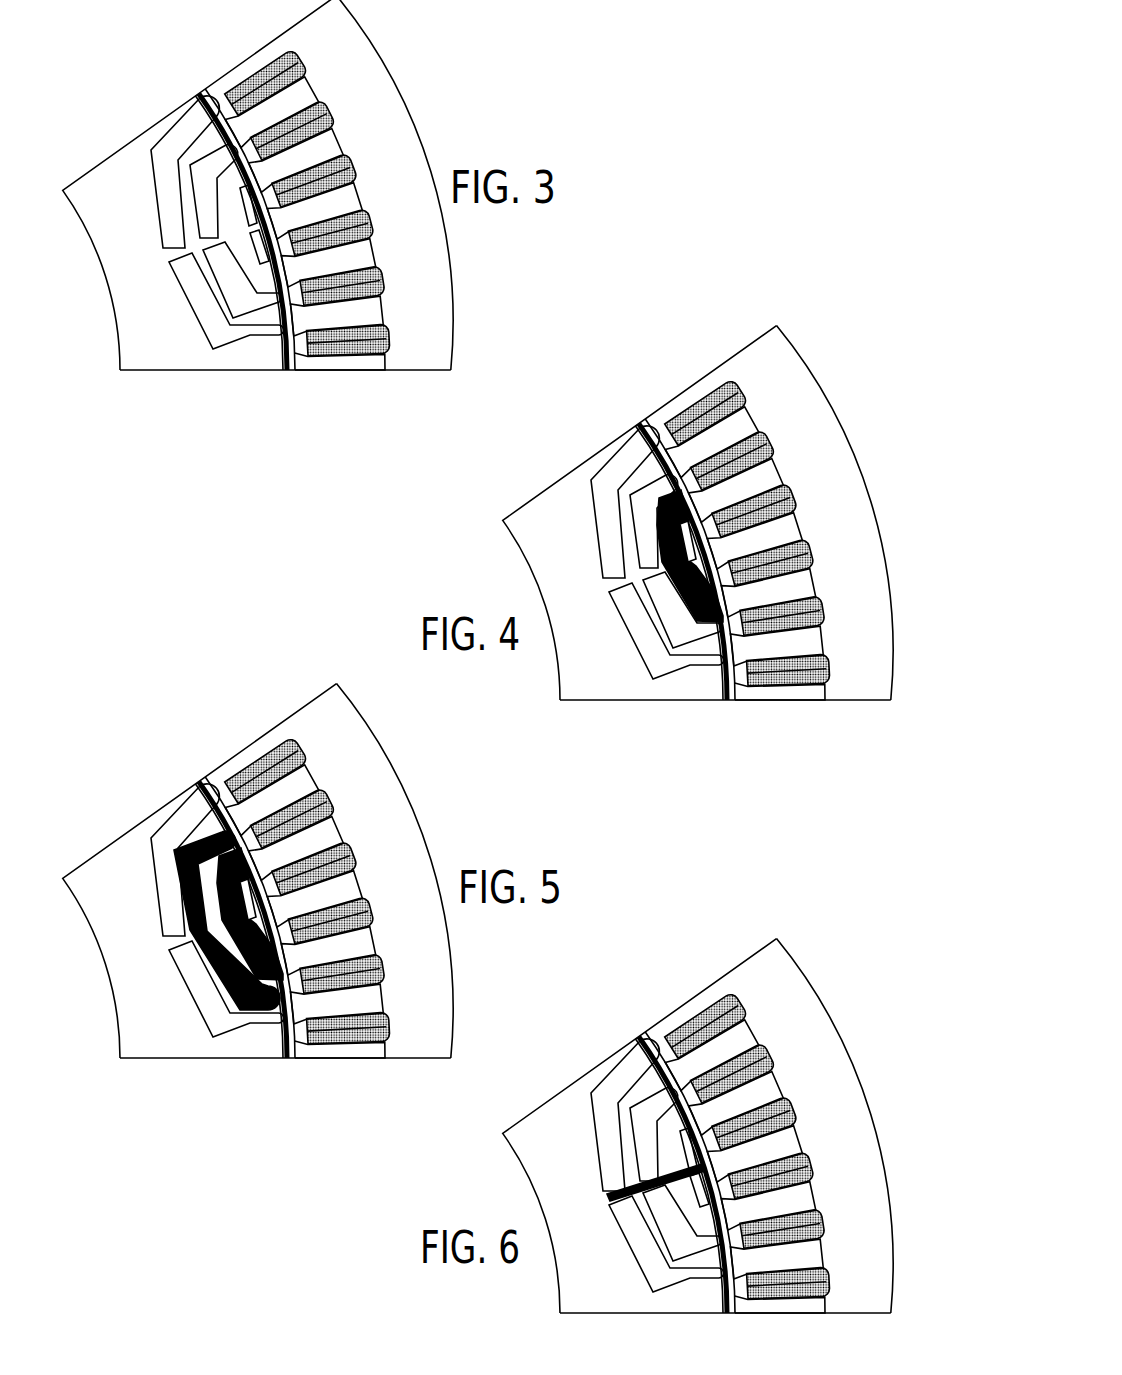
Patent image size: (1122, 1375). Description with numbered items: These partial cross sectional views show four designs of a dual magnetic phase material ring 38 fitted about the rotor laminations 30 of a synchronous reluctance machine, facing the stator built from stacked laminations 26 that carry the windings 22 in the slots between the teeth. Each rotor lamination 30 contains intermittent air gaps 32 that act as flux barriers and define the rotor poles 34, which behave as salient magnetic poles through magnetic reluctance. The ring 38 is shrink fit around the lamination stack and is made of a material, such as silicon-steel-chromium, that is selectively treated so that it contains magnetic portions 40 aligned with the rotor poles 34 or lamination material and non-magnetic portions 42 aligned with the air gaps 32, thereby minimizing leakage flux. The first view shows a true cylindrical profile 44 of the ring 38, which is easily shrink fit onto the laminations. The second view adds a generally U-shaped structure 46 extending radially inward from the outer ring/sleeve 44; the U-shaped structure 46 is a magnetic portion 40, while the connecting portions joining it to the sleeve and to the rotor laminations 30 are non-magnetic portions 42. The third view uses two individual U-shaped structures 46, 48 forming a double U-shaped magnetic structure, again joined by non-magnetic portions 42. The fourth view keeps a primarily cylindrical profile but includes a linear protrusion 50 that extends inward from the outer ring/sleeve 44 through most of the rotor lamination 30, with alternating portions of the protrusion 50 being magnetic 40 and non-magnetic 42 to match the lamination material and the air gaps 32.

In FIG. 3, the windings 22 is at (252, 76).
In FIG. 4, the windings 22 is at (747, 505).
In FIG. 5, the windings 22 is at (307, 860).
In FIG. 6, the windings 22 is at (747, 1112).
In FIG. 3, the laminations 26 is at (362, 40).
In FIG. 4, the laminations 26 is at (779, 513).
In FIG. 5, the laminations 26 is at (350, 871).
In FIG. 6, the laminations 26 is at (779, 1126).
In FIG. 3, the rotor laminations 30 is at (100, 173).
In FIG. 4, the rotor laminations 30 is at (689, 513).
In FIG. 5, the rotor laminations 30 is at (257, 871).
In FIG. 6, the rotor laminations 30 is at (664, 1126).
In FIG. 3, the air gaps 32 is at (160, 172).
In FIG. 4, the air gaps 32 is at (649, 562).
In FIG. 5, the air gaps 32 is at (168, 858).
In FIG. 6, the air gaps 32 is at (629, 1165).
In FIG. 3, the rotor poles 34 is at (280, 291).
In FIG. 3, the ring 38 is at (300, 374).
In FIG. 4, the ring 38 is at (686, 516).
In FIG. 5, the ring 38 is at (245, 875).
In FIG. 6, the ring 38 is at (686, 1129).
In FIG. 3, the magnetic portions 40 is at (214, 106).
In FIG. 4, the magnetic portions 40 is at (655, 616).
In FIG. 5, the magnetic portions 40 is at (206, 997).
In FIG. 6, the magnetic portions 40 is at (651, 1231).
In FIG. 3, the non-magnetic portions 42 is at (197, 120).
In FIG. 4, the non-magnetic portions 42 is at (637, 654).
In FIG. 5, the non-magnetic portions 42 is at (213, 1037).
In FIG. 6, the non-magnetic portions 42 is at (639, 1241).
In FIG. 3, the outer ring/sleeve 44 is at (194, 90).
In FIG. 4, the outer ring/sleeve 44 is at (636, 541).
In FIG. 5, the outer ring/sleeve 44 is at (196, 899).
In FIG. 6, the outer ring/sleeve 44 is at (636, 1152).
In FIG. 4, the U-shaped structure 46 is at (659, 577).
In FIG. 5, the U-shaped structure 46 is at (250, 980).
In FIG. 5, the U-shaped structure 48 is at (227, 972).
In FIG. 6, the linear protrusion 50 is at (605, 1232).